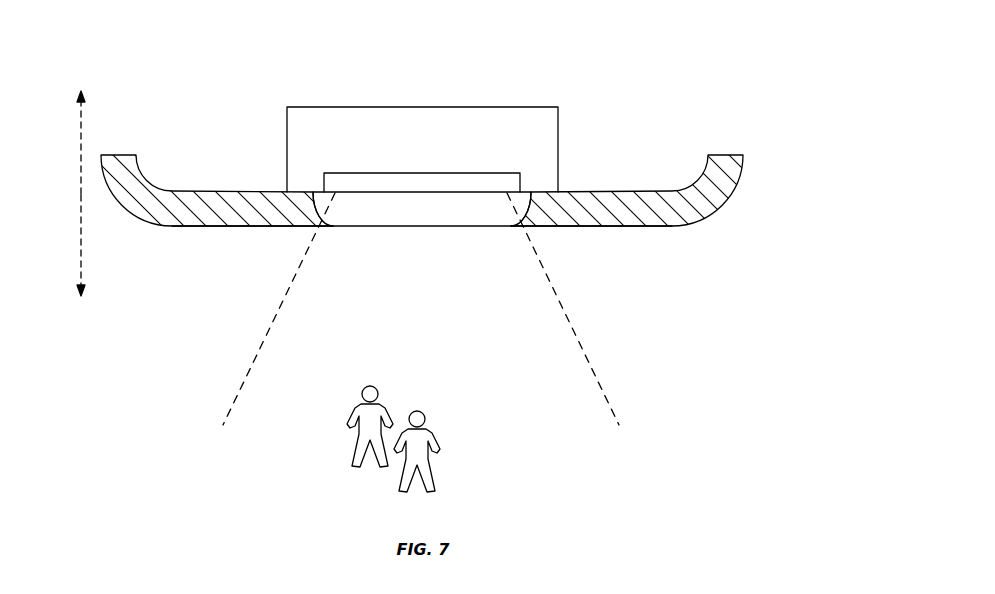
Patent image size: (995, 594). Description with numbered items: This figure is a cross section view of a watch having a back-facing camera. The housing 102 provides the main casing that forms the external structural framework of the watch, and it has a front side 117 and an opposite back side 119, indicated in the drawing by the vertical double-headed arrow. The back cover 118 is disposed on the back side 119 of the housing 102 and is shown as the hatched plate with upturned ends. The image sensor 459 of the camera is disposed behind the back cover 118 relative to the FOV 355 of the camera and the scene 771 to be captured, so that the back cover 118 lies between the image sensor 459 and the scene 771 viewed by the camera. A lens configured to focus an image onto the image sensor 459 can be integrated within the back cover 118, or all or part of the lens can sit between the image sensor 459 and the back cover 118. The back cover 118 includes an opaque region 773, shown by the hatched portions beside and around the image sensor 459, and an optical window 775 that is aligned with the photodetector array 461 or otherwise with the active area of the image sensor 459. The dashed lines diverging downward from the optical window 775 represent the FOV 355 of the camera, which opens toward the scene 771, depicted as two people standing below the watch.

The housing 102 is at (745, 160).
The front side 117 is at (67, 75).
The back side 119 is at (67, 326).
The back cover 118 is at (203, 227).
The image sensor 459 is at (540, 107).
The photodetector array 461 is at (397, 172).
The opaque region 773 is at (648, 226).
The optical window 775 is at (365, 226).
The FOV 355 is at (580, 337).
The scene 771 is at (454, 461).